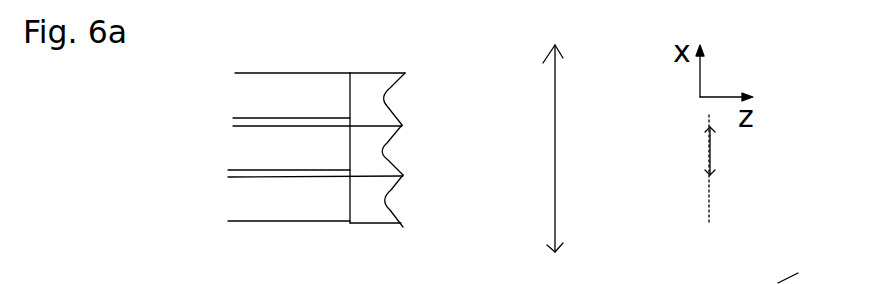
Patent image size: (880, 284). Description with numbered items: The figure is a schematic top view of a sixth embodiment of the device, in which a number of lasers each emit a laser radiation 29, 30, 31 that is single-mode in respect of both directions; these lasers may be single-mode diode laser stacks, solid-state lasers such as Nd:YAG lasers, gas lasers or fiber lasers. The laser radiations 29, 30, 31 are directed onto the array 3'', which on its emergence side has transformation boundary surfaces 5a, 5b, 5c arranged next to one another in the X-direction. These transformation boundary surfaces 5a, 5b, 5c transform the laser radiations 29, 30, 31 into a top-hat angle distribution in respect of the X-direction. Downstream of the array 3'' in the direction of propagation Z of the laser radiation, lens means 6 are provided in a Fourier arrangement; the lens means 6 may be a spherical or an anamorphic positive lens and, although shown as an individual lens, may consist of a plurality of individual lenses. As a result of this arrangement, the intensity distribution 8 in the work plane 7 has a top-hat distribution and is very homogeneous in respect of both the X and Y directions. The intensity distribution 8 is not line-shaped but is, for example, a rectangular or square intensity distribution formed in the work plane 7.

The array 3'' is at (347, 116).
The laser radiation 29 is at (300, 95).
The laser radiation 30 is at (272, 149).
The laser radiation 31 is at (260, 206).
The transformation boundary surface 5a is at (387, 105).
The transformation boundary surface 5b is at (390, 157).
The transformation boundary surface 5c is at (395, 190).
The lens means 6 is at (555, 203).
The work plane 7 is at (710, 210).
The intensity distribution 8 is at (710, 158).